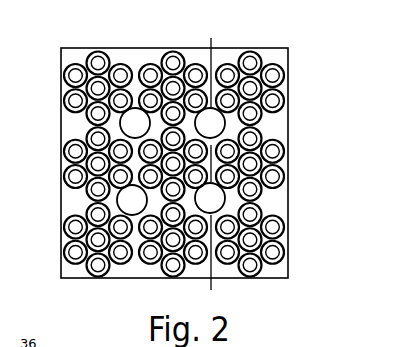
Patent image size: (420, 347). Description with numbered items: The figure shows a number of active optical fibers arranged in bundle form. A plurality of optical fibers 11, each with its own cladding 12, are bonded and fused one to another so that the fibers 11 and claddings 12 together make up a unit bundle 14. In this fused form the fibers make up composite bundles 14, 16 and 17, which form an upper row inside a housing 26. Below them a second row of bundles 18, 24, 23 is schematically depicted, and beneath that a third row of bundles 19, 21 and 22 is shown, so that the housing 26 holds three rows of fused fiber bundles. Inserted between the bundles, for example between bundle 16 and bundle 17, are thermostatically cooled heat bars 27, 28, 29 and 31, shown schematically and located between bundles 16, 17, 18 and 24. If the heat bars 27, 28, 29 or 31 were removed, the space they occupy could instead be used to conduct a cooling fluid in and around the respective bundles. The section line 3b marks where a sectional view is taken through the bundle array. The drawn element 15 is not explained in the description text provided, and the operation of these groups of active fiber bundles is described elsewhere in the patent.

The optical fiber 11 is at (261, 57).
The cladding 12 is at (249, 62).
The unit bundle 14 is at (288, 65).
The tube 15 is at (284, 89).
The composite bundle 16 is at (155, 58).
The composite bundle 17 is at (84, 60).
The bundle 18 is at (63, 162).
The bundle 19 is at (63, 238).
The bundle 21 is at (186, 268).
The bundle 22 is at (284, 238).
The bundle 23 is at (284, 163).
The bundle 24 is at (154, 195).
The housing 26 is at (172, 52).
The heat bar 27 is at (128, 131).
The heat bar 28 is at (203, 131).
The heat bar 29 is at (125, 208).
The heat bar 31 is at (203, 206).
The section line 3b- 3b is at (211, 36).